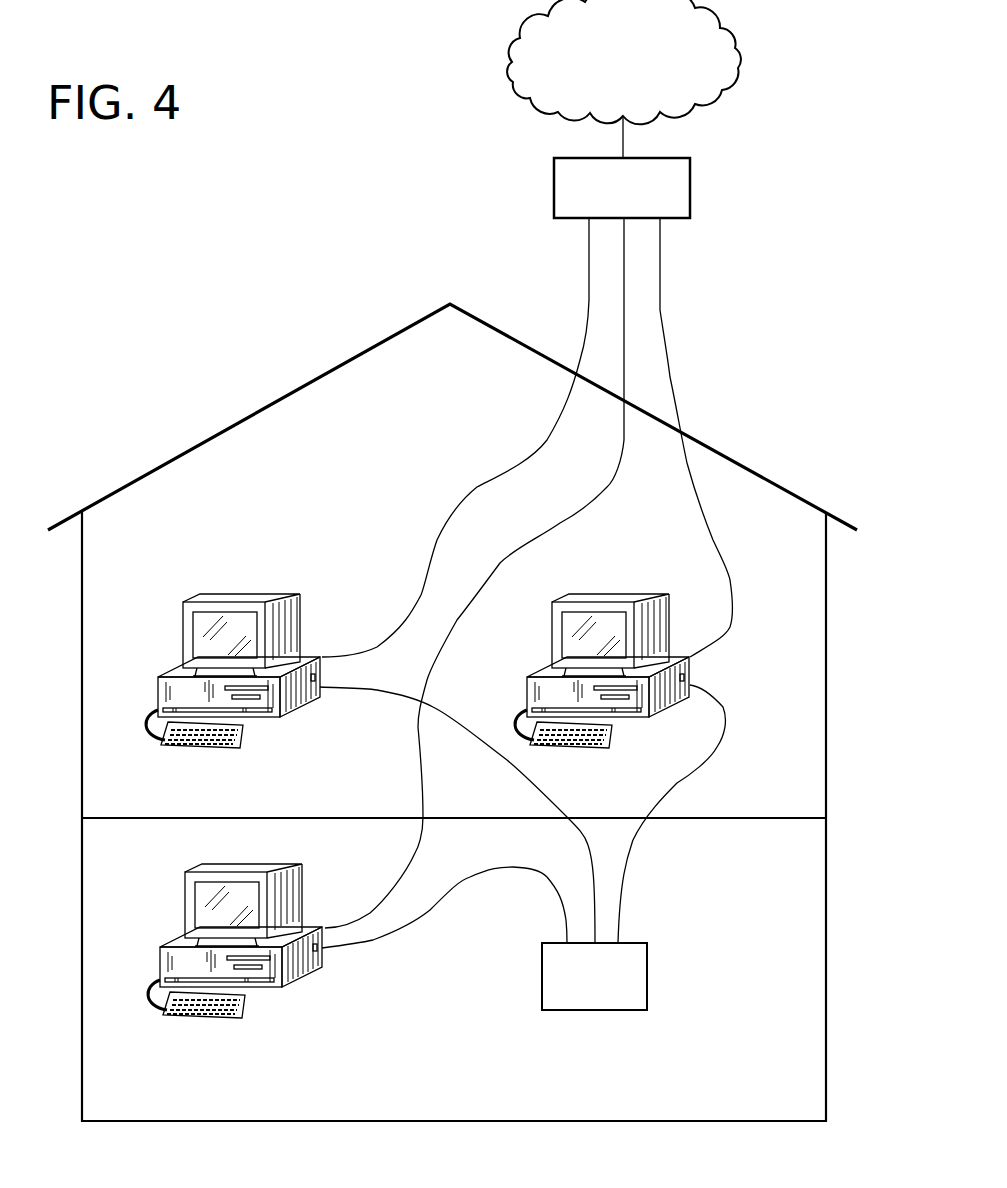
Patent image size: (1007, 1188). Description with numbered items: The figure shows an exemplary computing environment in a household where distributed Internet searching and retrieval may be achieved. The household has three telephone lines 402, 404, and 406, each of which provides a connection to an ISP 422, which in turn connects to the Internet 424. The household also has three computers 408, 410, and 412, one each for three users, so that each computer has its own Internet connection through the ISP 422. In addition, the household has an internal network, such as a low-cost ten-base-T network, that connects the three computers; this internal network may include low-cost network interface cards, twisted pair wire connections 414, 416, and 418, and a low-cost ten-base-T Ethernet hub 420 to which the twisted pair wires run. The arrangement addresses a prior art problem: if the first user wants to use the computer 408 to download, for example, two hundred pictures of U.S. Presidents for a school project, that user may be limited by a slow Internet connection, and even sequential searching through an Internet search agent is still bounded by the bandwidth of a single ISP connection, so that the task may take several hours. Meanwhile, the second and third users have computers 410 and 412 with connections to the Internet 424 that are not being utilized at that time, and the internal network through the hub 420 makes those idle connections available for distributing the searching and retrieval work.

The telephone line 402 is at (588, 302).
The telephone line 404 is at (625, 335).
The telephone line 406 is at (667, 360).
The computer 408 is at (310, 705).
The computer 410 is at (690, 703).
The computer 412 is at (313, 970).
The twisted pair wire connection 414 is at (488, 745).
The twisted pair wire connection 416 is at (452, 902).
The twisted pair wire connection 418 is at (710, 773).
The Ethernet hub 420 is at (597, 1010).
The ISP 422 is at (690, 188).
The Internet 424 is at (608, 96).